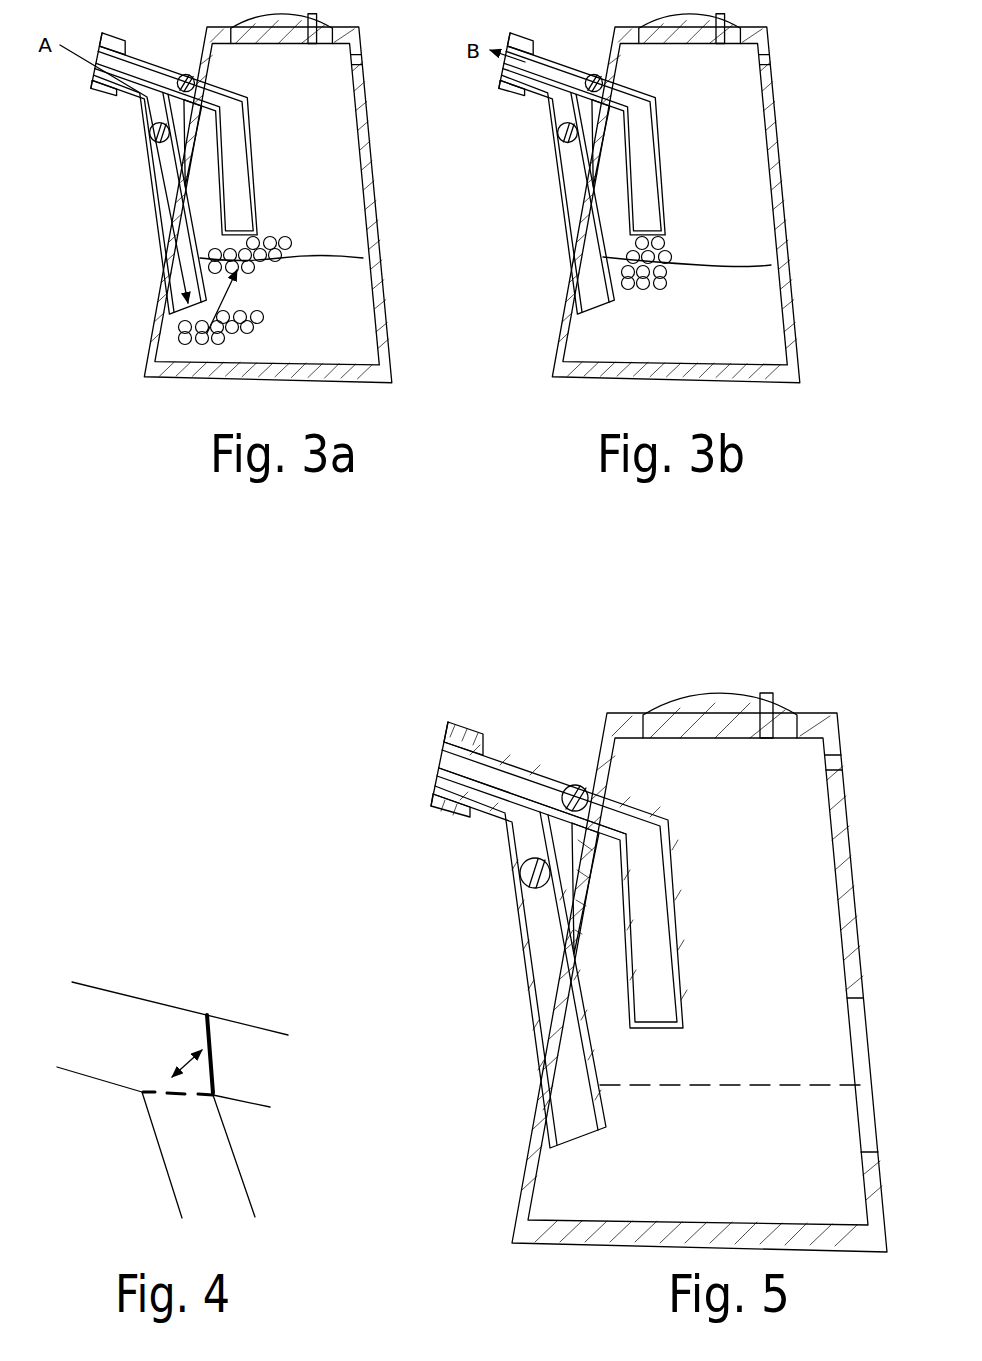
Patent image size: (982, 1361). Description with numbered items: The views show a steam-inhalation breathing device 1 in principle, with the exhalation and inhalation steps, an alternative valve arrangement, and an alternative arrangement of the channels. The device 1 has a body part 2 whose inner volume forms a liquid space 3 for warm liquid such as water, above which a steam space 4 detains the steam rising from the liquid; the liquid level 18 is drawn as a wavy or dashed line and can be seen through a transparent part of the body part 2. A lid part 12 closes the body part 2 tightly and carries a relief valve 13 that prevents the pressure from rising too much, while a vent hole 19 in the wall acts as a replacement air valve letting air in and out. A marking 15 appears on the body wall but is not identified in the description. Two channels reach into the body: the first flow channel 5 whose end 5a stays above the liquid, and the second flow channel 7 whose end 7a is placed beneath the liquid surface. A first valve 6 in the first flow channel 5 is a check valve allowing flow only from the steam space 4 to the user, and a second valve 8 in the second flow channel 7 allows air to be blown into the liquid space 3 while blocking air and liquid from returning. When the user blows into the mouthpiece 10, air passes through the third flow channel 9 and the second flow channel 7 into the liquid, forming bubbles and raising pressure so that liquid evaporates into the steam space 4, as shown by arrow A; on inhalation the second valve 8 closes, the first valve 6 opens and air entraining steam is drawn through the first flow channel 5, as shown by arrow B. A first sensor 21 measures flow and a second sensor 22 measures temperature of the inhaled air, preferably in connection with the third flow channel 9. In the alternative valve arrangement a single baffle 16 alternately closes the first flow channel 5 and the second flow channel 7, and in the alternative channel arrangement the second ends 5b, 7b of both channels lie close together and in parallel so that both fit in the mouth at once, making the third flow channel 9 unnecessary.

In FIG. 3A, the device 1 is at (284, 192).
In FIG. 3B, the device 1 is at (692, 192).
In FIG. 5, the device 1 is at (726, 942).
In FIG. 5, the body part 2 is at (855, 913).
In FIG. 3A, the liquid space 3 is at (295, 338).
In FIG. 3B, the liquid space 3 is at (683, 338).
In FIG. 5, the liquid space 3 is at (683, 1146).
In FIG. 3A, the steam space 4 is at (301, 249).
In FIG. 3B, the steam space 4 is at (693, 249).
In FIG. 5, the steam space 4 is at (690, 1059).
In FIG. 3A, the first flow channel 5 is at (174, 134).
In FIG. 3B, the first flow channel 5 is at (582, 134).
In FIG. 4, the first flow channel 5 is at (257, 1040).
In FIG. 5, the first flow channel 5 is at (553, 858).
In FIG. 5, the end of the first flow channel 5a is at (670, 1022).
In FIG. 5, the second end of the first flow channel 5b is at (448, 755).
In FIG. 3A, the first valve 6 is at (185, 83).
In FIG. 3B, the first valve 6 is at (593, 83).
In FIG. 5, the first valve 6 is at (572, 786).
In FIG. 3A, the second flow channel 7 is at (149, 194).
In FIG. 3B, the second flow channel 7 is at (556, 194).
In FIG. 4, the second flow channel 7 is at (160, 1150).
In FIG. 5, the second flow channel 7 is at (484, 974).
In FIG. 5, the end of the second flow channel 7a is at (580, 1140).
In FIG. 5, the second end of the second flow channel 7b is at (436, 788).
In FIG. 3A, the second valve 8 is at (160, 133).
In FIG. 3B, the second valve 8 is at (568, 133).
In FIG. 5, the second valve 8 is at (520, 873).
In FIG. 4, the third flow channel 9 is at (80, 998).
In FIG. 5, the third flow channel 9 is at (532, 801).
In FIG. 5, the mouthpiece 10 is at (455, 722).
In FIG. 3A, the lid part 12 is at (282, 29).
In FIG. 3B, the lid part 12 is at (690, 29).
In FIG. 5, the lid part 12 is at (660, 713).
In FIG. 3A, the relief valve 13 is at (312, 29).
In FIG. 3B, the relief valve 13 is at (720, 29).
In FIG. 5, the relief valve 13 is at (765, 693).
In FIG. 5, the lining section 15 is at (862, 1040).
In FIG. 4, the baffle 16 is at (203, 1030).
In FIG. 5, the baffle 16 is at (585, 888).
In FIG. 5, the liquid level 18 is at (770, 1086).
In FIG. 3A, the vent hole 19 is at (362, 66).
In FIG. 3B, the vent hole 19 is at (770, 66).
In FIG. 5, the vent hole 19 is at (842, 762).
In FIG. 5, the first sensor 21 is at (498, 773).
In FIG. 5, the second sensor 22 is at (445, 807).